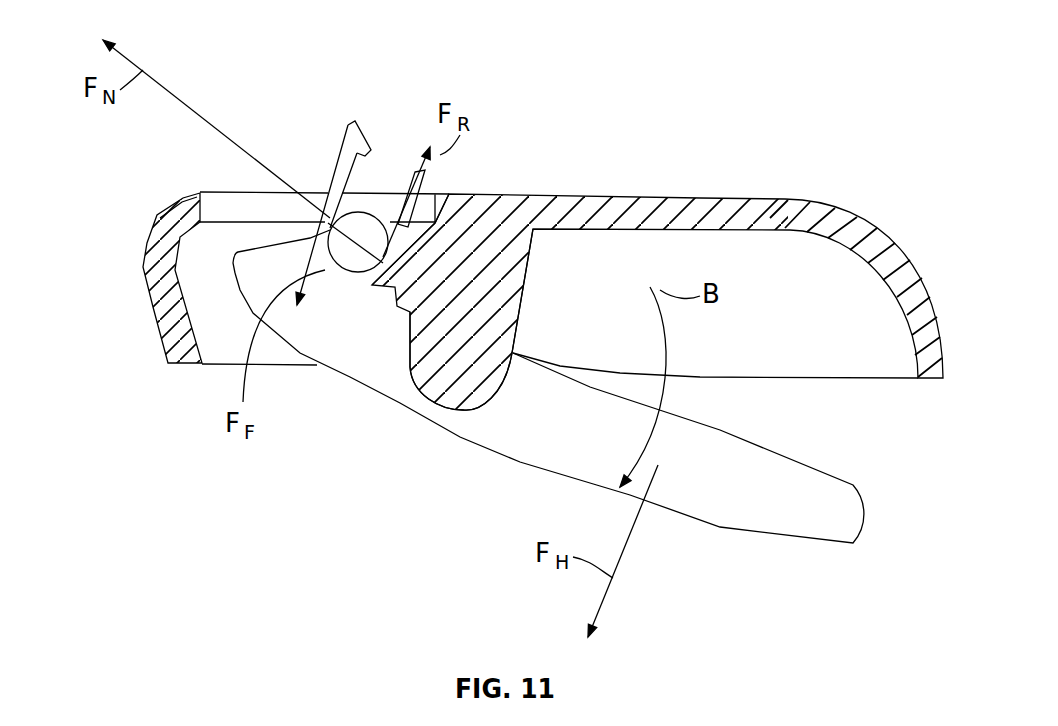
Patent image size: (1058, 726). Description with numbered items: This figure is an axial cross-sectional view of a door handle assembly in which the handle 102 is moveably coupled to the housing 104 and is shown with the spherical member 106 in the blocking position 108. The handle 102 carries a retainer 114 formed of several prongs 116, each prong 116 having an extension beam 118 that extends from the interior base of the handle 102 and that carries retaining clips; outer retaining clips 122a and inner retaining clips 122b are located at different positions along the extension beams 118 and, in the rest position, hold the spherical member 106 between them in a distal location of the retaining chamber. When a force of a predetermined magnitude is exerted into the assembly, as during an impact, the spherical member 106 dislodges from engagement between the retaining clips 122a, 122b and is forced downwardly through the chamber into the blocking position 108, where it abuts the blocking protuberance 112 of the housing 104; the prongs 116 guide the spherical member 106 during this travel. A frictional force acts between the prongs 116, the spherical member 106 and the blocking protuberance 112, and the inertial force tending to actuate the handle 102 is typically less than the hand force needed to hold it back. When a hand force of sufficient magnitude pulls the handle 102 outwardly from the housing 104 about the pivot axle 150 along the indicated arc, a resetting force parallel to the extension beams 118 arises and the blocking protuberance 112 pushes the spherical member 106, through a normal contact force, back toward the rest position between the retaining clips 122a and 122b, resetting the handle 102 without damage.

The handle 102 is at (725, 527).
The housing 104 is at (641, 196).
The spherical member 106 is at (368, 213).
The blocking position 108 is at (228, 362).
The blocking protuberance 112 is at (410, 250).
The retainer 114 is at (344, 132).
The prongs 116 is at (323, 192).
The extension beam 118 is at (325, 207).
The outer retaining clips 122a is at (363, 133).
The inner retaining clips 122b is at (420, 170).
The pivot axle 150 is at (444, 408).